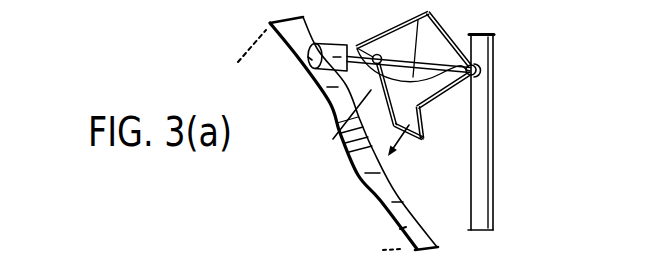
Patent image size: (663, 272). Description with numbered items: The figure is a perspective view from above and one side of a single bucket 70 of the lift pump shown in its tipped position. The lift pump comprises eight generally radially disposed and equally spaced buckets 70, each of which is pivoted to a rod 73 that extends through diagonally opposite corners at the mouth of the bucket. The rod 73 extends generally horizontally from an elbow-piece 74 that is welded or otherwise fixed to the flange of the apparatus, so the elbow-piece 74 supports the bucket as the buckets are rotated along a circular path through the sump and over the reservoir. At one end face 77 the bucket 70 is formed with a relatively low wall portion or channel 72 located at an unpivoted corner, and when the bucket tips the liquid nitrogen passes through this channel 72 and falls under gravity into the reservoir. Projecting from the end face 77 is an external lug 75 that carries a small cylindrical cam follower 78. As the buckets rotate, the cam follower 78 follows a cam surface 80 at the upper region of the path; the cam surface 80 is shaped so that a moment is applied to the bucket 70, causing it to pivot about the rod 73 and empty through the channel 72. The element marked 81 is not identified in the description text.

The bucket 70 is at (381, 44).
The low wall portion (channel) 72 is at (358, 167).
The rod 73 is at (453, 46).
The elbow-piece 74 is at (488, 133).
The external lug 75 is at (345, 44).
The end face 77 is at (340, 128).
The cam follower (counterbalancing baffle) 78 is at (438, 138).
The cam surface 80 is at (403, 228).
The motor mounting end 81 is at (311, 59).